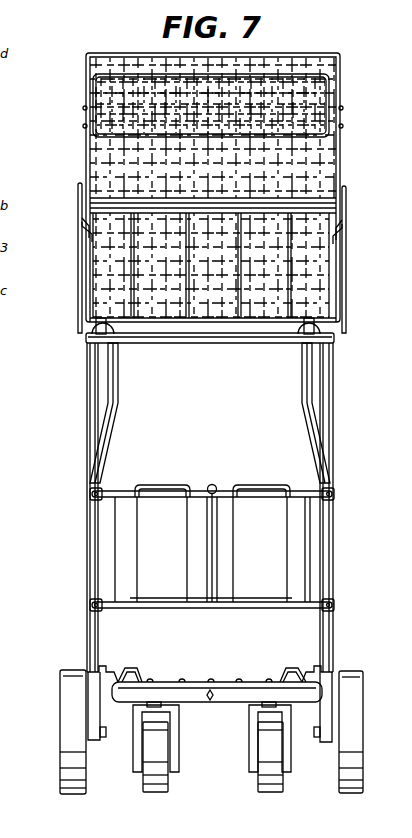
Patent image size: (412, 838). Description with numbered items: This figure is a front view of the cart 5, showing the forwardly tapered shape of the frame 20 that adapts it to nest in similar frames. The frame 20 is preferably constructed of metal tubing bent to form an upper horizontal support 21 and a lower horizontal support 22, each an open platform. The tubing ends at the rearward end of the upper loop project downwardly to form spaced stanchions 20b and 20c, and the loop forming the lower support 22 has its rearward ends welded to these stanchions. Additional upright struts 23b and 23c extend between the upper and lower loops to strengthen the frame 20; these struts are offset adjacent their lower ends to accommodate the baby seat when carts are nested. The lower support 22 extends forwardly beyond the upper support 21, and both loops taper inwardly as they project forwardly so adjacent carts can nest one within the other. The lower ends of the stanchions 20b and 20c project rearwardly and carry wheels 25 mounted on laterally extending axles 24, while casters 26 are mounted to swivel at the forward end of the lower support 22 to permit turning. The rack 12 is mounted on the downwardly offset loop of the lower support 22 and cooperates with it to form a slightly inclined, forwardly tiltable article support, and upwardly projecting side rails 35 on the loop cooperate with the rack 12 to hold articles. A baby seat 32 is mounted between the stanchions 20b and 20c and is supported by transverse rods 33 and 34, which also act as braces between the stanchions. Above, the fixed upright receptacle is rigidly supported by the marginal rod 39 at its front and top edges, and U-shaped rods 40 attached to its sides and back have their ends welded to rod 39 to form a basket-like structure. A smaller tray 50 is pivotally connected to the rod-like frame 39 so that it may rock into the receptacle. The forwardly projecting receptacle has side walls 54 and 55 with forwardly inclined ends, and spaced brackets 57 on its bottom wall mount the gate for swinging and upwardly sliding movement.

The cart 5 is at (60, 106).
The rack 12 is at (208, 679).
The frame 20 is at (74, 628).
The stanchion 20b is at (333, 470).
The stanchion 20c is at (88, 432).
The upper horizontal support 21 is at (193, 344).
The lower horizontal support 22 is at (214, 706).
The upright strut 23b is at (318, 428).
The upright strut 23c is at (114, 414).
The axle 24 is at (60, 733).
The wheel 25 is at (70, 794).
The caster 26 is at (262, 792).
The baby seat 32 is at (231, 486).
The transverse rod 33 is at (193, 490).
The transverse rod 34 is at (204, 606).
The side rail 35 is at (130, 672).
The marginal rod 39 is at (343, 167).
The U-shaped rod 40 is at (82, 108).
The tray 50 is at (121, 66).
The side wall 54 is at (348, 273).
The side wall 55 is at (82, 272).
The bracket 57 is at (106, 326).